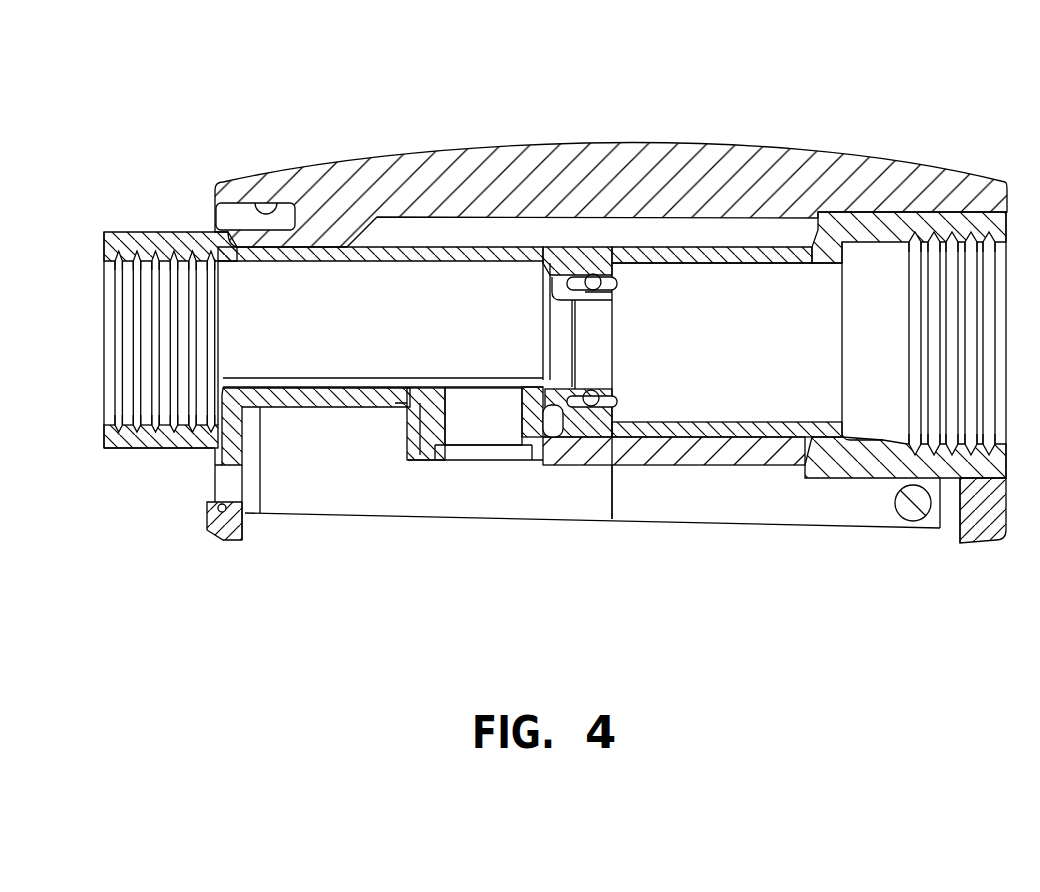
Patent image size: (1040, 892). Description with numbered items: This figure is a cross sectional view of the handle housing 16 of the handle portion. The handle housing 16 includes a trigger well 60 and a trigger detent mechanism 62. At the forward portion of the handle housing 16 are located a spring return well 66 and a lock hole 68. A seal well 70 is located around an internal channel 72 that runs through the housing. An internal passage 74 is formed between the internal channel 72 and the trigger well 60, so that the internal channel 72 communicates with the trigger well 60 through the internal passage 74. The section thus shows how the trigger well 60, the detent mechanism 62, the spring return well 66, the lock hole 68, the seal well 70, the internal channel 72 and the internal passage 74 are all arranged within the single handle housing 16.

The handle housing 16 is at (452, 151).
The trigger well 60 is at (263, 473).
The trigger detent mechanism 62 is at (885, 507).
The spring return well 66 is at (278, 203).
The lock hole 68 is at (223, 503).
The seal well 70 is at (604, 285).
The internal channel 72 is at (730, 270).
The internal passage 74 is at (445, 403).